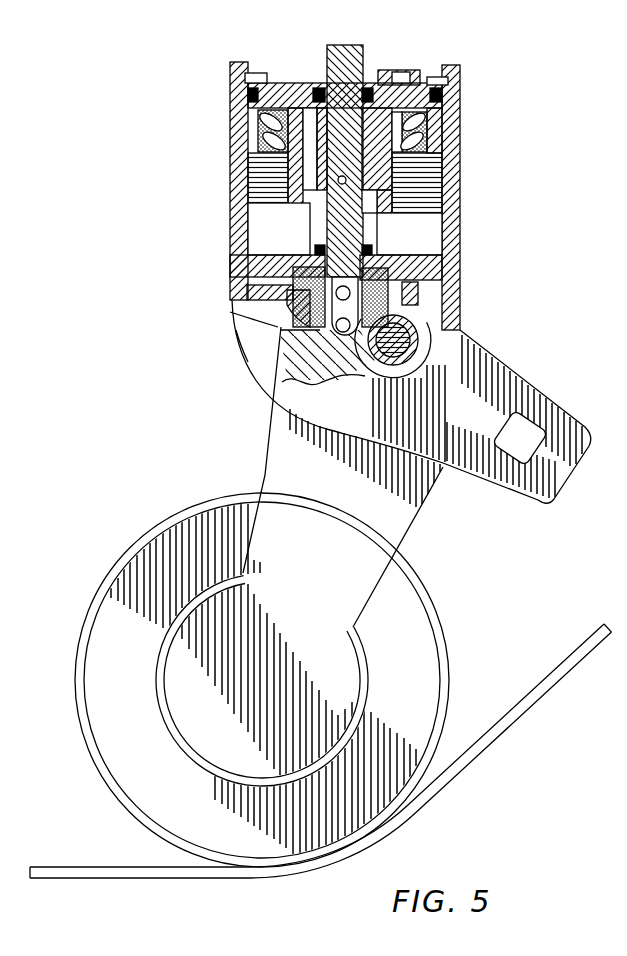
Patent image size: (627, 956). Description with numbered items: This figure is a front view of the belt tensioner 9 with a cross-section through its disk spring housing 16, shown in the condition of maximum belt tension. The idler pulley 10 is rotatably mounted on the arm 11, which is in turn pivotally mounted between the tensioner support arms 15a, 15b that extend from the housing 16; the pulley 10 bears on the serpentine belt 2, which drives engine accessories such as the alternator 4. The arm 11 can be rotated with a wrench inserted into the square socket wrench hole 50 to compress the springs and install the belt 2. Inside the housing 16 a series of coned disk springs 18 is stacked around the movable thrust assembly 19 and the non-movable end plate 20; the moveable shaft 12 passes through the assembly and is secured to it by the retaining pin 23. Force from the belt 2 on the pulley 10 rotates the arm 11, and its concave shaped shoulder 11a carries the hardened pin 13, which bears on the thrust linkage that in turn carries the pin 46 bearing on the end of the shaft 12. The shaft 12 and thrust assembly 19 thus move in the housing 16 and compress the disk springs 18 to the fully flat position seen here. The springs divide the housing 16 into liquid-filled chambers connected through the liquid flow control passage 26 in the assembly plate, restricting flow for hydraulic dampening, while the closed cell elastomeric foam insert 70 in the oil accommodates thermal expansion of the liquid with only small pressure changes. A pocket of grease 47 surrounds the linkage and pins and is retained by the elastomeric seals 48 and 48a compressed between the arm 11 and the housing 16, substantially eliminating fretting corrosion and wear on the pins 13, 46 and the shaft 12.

The serpentine belt 2 is at (570, 649).
The alternator 4 is at (458, 388).
The tensioner 9 is at (355, 190).
The idler pulley 10 is at (420, 615).
The arm 11 is at (405, 510).
The concave shaped shoulder 11a is at (280, 334).
The moveable shaft 12 is at (440, 237).
The pin 13 is at (338, 340).
The tensioner support arm 15a is at (450, 396).
The tensioner support arm 15b is at (242, 362).
The housing 16 is at (458, 218).
The disk springs 18 is at (459, 180).
The thrust assembly 19 is at (268, 128).
The end plate 20 is at (286, 83).
The retaining pin 23 is at (343, 176).
The liquid flow control passage 26 is at (300, 202).
The pin 46 is at (408, 283).
The grease 47 is at (293, 278).
The elastomeric seal 48 is at (290, 307).
The elastomeric seal 48a is at (420, 303).
The square socket wrench hole 50 is at (552, 468).
The closed cell elastomeric foam insert 70 is at (265, 118).